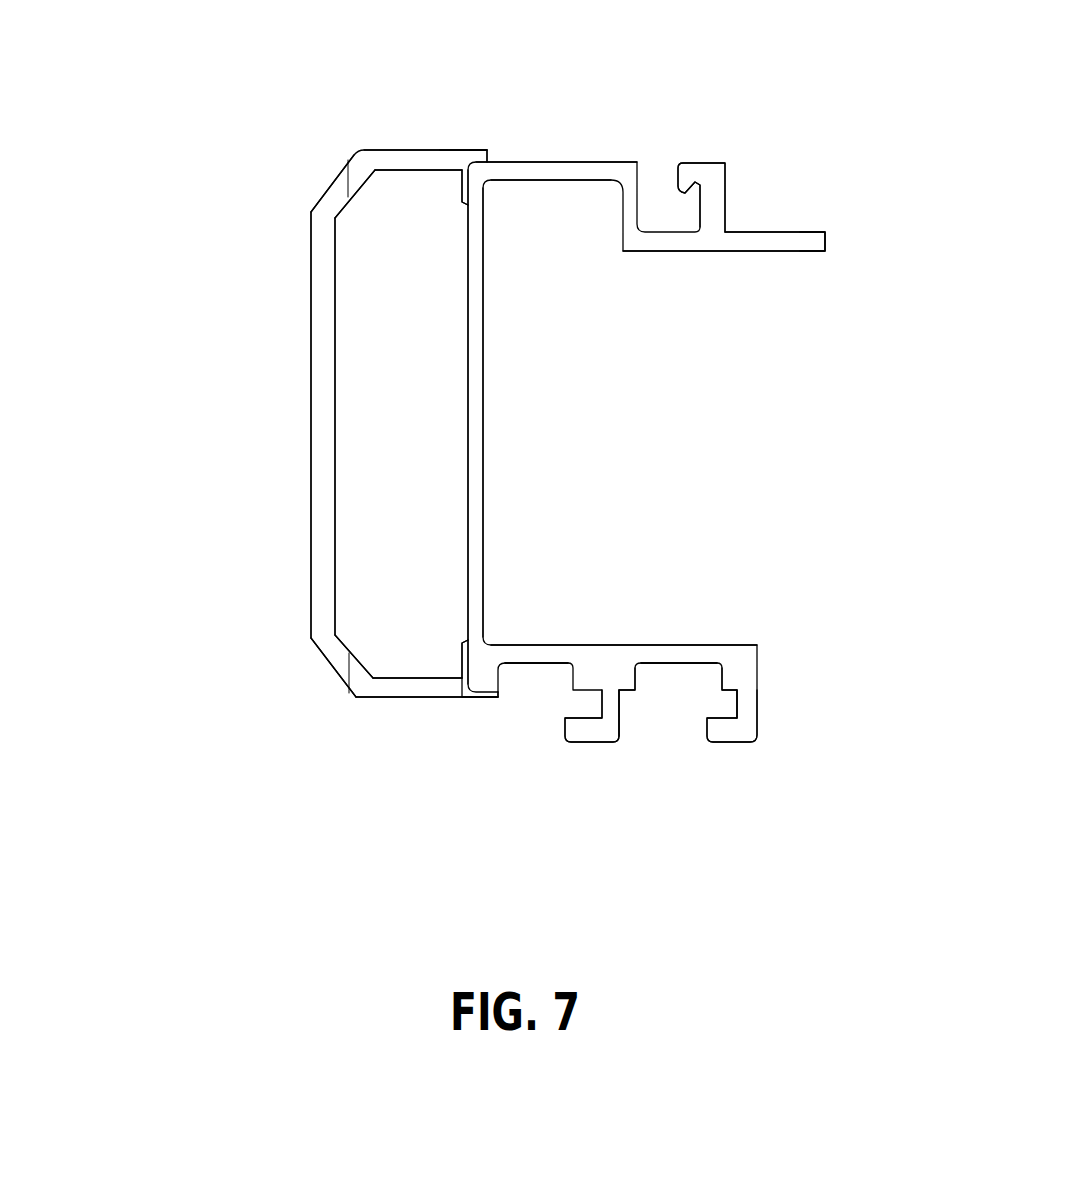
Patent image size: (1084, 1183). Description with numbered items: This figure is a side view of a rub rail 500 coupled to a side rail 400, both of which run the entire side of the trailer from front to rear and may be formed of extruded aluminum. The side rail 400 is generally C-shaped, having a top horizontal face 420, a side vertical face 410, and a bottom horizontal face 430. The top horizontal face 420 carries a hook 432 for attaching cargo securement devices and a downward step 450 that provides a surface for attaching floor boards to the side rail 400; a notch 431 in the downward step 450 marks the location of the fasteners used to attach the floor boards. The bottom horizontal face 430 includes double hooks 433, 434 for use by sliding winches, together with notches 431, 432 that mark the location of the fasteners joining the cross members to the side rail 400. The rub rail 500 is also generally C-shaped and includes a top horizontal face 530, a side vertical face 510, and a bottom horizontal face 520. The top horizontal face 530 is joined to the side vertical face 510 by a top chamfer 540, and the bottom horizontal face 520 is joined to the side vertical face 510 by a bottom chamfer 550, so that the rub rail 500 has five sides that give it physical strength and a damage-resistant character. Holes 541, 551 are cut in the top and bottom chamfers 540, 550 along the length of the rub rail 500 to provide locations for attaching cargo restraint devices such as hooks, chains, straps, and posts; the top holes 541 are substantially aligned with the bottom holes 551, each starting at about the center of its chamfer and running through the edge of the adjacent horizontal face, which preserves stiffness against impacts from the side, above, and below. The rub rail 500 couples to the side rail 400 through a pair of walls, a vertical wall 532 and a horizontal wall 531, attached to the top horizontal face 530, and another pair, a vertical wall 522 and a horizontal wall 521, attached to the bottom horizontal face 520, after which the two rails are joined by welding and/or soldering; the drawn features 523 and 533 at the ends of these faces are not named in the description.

The side rail 400 is at (693, 382).
The side vertical face 410 is at (498, 422).
The top horizontal face 420 is at (553, 207).
The bottom horizontal face 430 is at (631, 627).
The notch 431 is at (789, 218).
The hook 432 is at (719, 138).
The double hook 433 is at (612, 762).
The double hook 434 is at (759, 763).
The downward step 450 is at (856, 242).
The rub rail 500 is at (192, 380).
The side vertical face 510 is at (289, 451).
The bottom horizontal face 520 is at (392, 720).
The horizontal wall 521 is at (468, 720).
The vertical wall 522 is at (452, 644).
The bottom junction 523 is at (492, 721).
The top horizontal face 530 is at (403, 128).
The horizontal wall 531 is at (475, 126).
The vertical wall 532 is at (449, 220).
The top plate end 533 is at (498, 137).
The top chamfer 540 is at (304, 178).
The top hole 541 is at (331, 145).
The bottom chamfer 550 is at (309, 672).
The bottom hole 551 is at (334, 707).